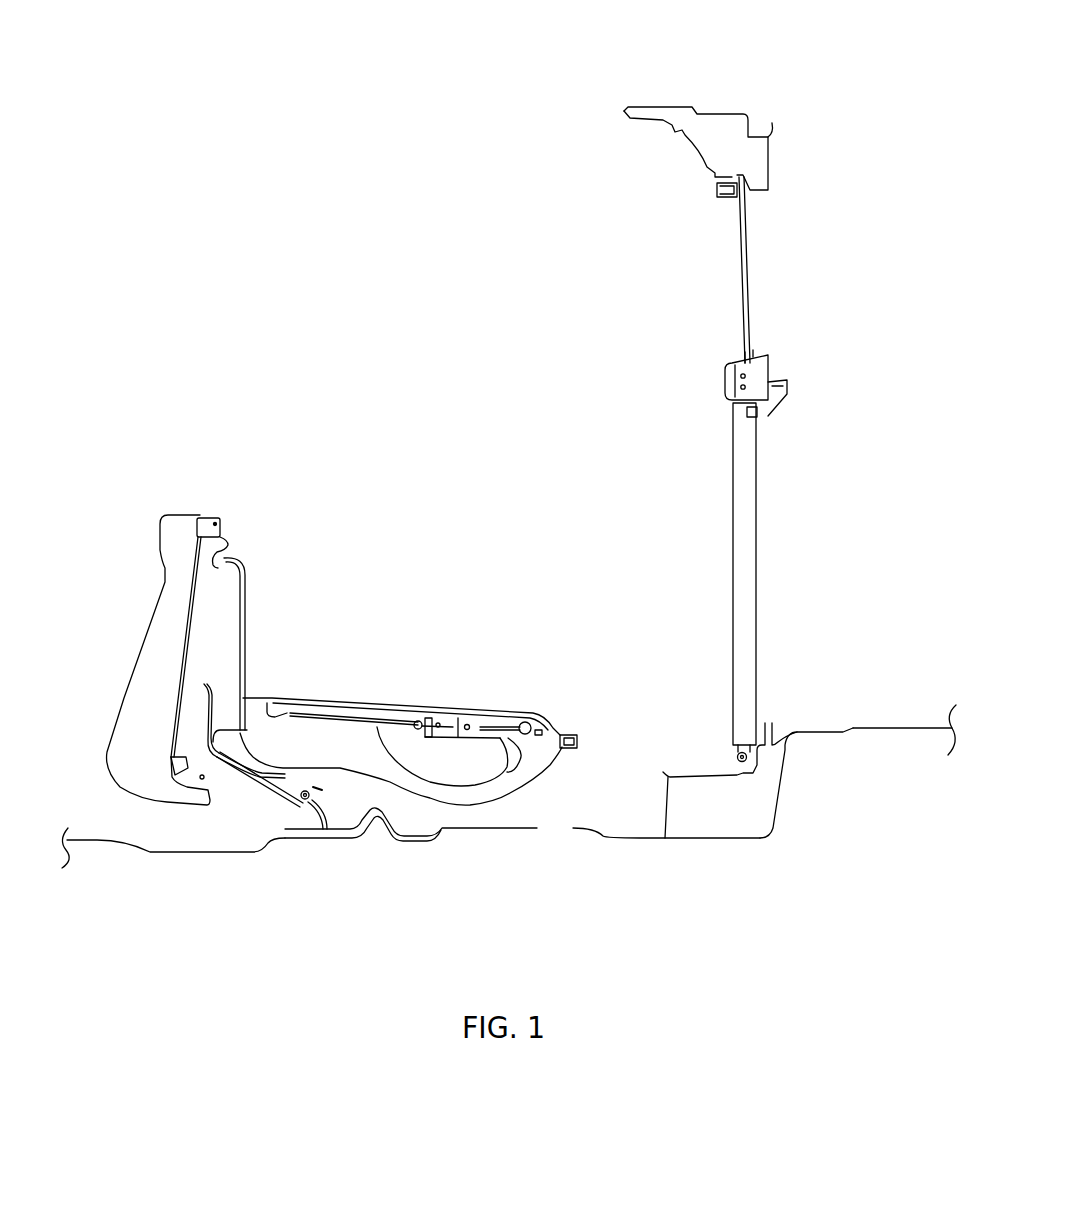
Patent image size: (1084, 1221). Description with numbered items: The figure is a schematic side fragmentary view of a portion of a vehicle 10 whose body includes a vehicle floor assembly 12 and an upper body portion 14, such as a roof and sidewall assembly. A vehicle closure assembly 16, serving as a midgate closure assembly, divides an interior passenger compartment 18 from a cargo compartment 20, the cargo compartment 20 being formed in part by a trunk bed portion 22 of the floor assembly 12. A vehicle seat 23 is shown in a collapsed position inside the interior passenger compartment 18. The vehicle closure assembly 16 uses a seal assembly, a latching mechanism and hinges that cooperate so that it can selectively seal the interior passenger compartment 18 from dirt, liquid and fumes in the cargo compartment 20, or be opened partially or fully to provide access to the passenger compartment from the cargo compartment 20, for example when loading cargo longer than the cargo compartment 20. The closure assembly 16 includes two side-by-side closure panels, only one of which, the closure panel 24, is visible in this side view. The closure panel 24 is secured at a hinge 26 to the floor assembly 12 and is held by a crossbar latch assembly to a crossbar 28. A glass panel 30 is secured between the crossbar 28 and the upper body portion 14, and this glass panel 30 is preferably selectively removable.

The vehicle 10 is at (307, 222).
The vehicle floor assembly 12 is at (537, 828).
The upper body portion 14 is at (720, 112).
The vehicle closure assembly 16 is at (716, 477).
The interior passenger compartment 18 is at (468, 382).
The cargo compartment 20 is at (897, 535).
The trunk bed portion 22 is at (883, 730).
The vehicle seat 23 is at (413, 677).
The closure panel 24 is at (757, 663).
The hinge 26 is at (737, 765).
The crossbar 28 is at (725, 383).
The glass panel 30 is at (747, 270).